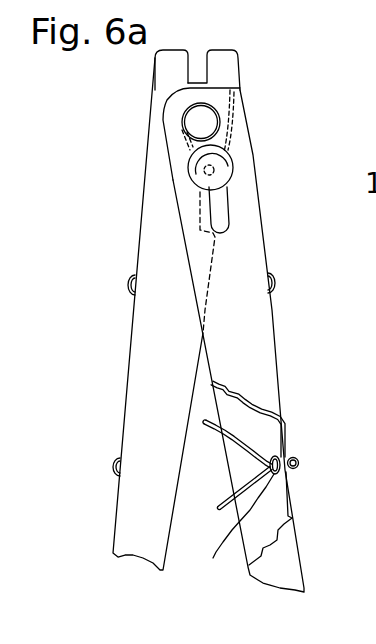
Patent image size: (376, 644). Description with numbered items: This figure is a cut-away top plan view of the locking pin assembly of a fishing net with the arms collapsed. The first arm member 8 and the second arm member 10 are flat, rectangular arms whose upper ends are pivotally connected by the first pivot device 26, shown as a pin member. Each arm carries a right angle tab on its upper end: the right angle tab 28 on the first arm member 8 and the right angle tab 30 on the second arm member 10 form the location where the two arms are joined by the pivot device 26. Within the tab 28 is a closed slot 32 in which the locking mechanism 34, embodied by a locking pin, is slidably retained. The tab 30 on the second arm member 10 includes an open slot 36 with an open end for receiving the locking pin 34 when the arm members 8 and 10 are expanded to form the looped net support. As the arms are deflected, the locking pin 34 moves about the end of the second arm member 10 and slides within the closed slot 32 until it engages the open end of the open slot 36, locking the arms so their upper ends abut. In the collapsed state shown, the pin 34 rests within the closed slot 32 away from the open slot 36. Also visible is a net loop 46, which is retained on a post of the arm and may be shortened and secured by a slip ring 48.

The first arm member 8 is at (252, 247).
The second arm member 10 is at (155, 238).
The first pivot device 26 is at (204, 122).
The right angle tab 28 is at (247, 143).
The right angle tab 30 is at (158, 97).
The closed slot 32 is at (215, 212).
The locking mechanism 34 is at (197, 172).
The open slot 36 is at (197, 62).
The net loop 46 is at (298, 459).
The slip ring 48 is at (213, 558).